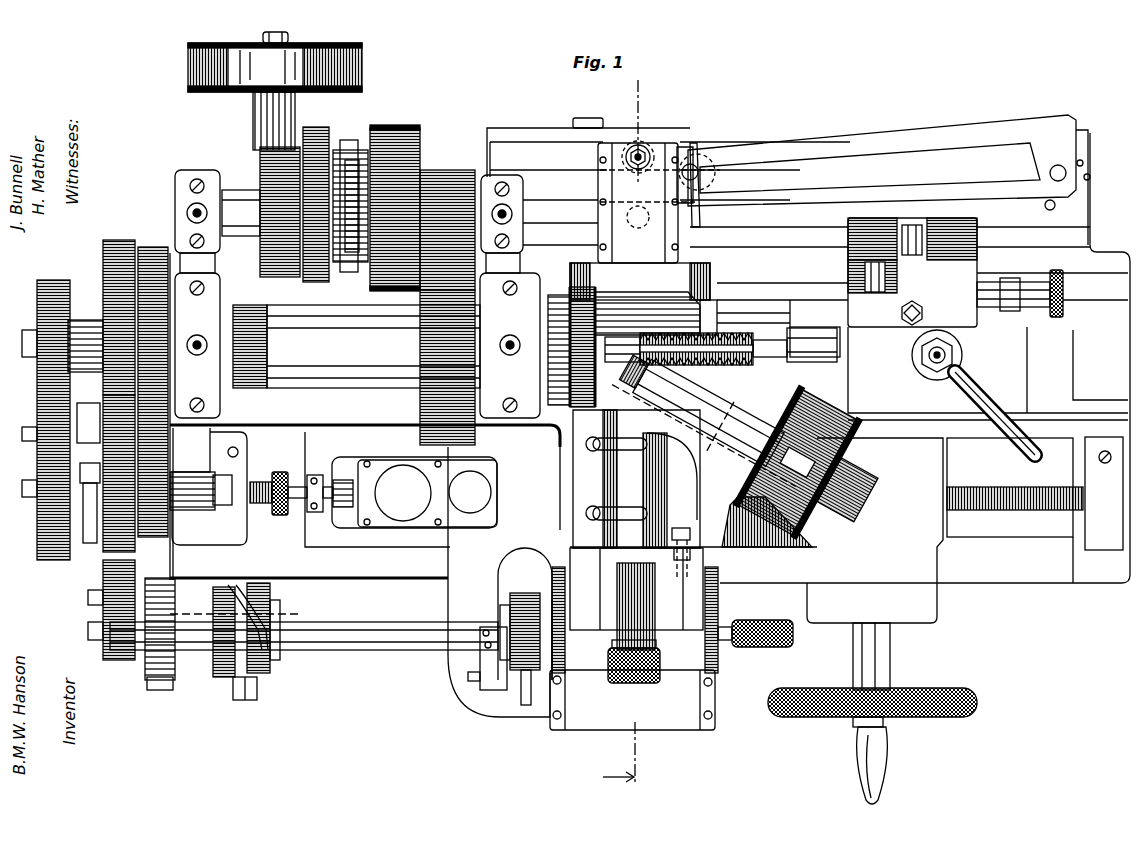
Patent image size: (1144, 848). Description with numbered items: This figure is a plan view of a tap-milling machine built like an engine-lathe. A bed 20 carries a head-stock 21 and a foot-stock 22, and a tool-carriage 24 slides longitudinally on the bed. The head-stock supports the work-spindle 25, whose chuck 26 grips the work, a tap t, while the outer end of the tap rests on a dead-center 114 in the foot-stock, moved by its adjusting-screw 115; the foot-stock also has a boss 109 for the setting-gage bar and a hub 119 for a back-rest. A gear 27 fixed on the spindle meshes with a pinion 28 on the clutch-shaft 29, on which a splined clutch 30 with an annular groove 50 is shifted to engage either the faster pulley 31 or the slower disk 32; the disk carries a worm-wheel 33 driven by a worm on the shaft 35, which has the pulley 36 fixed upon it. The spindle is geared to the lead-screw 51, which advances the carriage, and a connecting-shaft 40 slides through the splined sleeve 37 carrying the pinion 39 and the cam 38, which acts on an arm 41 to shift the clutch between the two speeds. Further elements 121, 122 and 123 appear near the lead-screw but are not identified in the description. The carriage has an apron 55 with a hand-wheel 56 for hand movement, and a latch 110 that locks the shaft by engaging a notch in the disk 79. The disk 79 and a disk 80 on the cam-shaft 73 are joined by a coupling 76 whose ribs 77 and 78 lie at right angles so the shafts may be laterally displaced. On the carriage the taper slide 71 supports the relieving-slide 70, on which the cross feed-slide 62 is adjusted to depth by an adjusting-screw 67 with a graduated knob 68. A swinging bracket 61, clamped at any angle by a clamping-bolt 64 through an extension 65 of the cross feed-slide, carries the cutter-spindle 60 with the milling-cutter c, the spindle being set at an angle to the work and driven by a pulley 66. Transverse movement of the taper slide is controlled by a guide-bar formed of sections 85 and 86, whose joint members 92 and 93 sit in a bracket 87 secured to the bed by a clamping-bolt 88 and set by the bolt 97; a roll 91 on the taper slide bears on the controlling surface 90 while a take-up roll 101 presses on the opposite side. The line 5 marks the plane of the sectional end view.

The shaft 35 is at (277, 31).
The pulley 36 is at (364, 64).
The worm-wheel 33 is at (260, 160).
The disk 32 is at (318, 126).
The clutch 30 is at (362, 140).
The annular groove 50 is at (347, 208).
The pulley 31 is at (398, 128).
The pinion 28 is at (447, 170).
The gear 27 is at (420, 410).
The clutch-shaft 29 is at (173, 212).
The work-spindle 25 is at (357, 345).
The chuck 26 is at (571, 347).
The head-stock 21 is at (365, 416).
The bed 20 is at (650, 358).
The lead-screw 51 is at (272, 482).
The block 122 is at (323, 474).
The bracket 121 is at (486, 468).
The roller 123 is at (484, 498).
The connecting-shaft 40 is at (398, 650).
The pinion 39 is at (120, 662).
The cam 38 is at (222, 678).
The cam-sleeve 37 is at (278, 656).
The arm 41 is at (247, 702).
The guide-bar section 85 is at (530, 158).
The controlling-surface 90 is at (560, 165).
The clamping-bolt 88 is at (590, 118).
The taper slide 71 is at (668, 746).
The roll 91 is at (634, 144).
The roll 101 is at (625, 215).
The section line 5 is at (627, 444).
The segmental joint member 93 is at (705, 156).
The segmental joint member 92 is at (686, 146).
The guide-bar section 86 is at (950, 128).
The bolt 97 is at (1056, 165).
The bracket 87 is at (1088, 213).
The hub 119 is at (980, 226).
The boss 109 is at (897, 287).
The adjusting-screw 115 is at (985, 310).
The foot-stock 22 is at (959, 377).
The tool-carriage 24 is at (785, 577).
The apron 55 is at (925, 610).
The hand-wheel 56 is at (937, 718).
The cam-shaft 73 is at (752, 649).
The relieving-slide 70 is at (640, 281).
The tap t is at (730, 366).
The dead-center 114 is at (775, 358).
The cutter-spindle 60 is at (670, 414).
The milling-cutter c is at (655, 392).
The pulley 66 is at (850, 464).
The swinging bracket 61 is at (649, 479).
The cross feed-slide 62 is at (610, 479).
The extension 65 is at (660, 518).
The clamping-bolt 64 is at (680, 550).
The adjusting-screw 67 is at (617, 598).
The knob 68 is at (632, 686).
The disk 79 is at (508, 574).
The disk 80 is at (536, 572).
The coupling 76 is at (524, 592).
The driving rib 77 is at (510, 600).
The latch 110 is at (495, 700).
The driving rib 78 is at (527, 705).